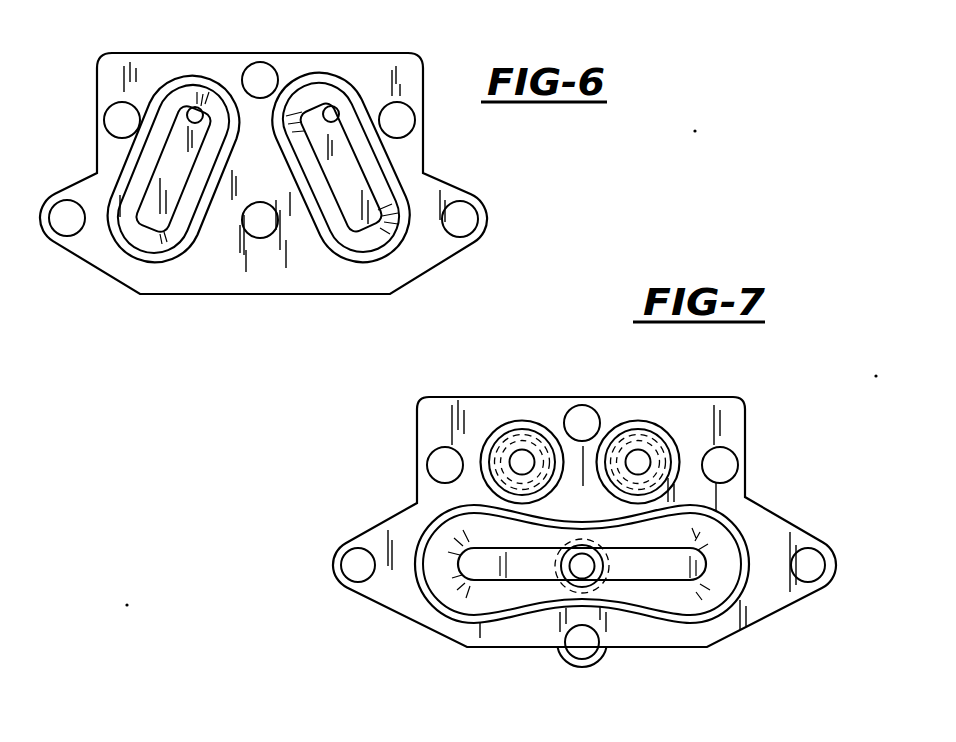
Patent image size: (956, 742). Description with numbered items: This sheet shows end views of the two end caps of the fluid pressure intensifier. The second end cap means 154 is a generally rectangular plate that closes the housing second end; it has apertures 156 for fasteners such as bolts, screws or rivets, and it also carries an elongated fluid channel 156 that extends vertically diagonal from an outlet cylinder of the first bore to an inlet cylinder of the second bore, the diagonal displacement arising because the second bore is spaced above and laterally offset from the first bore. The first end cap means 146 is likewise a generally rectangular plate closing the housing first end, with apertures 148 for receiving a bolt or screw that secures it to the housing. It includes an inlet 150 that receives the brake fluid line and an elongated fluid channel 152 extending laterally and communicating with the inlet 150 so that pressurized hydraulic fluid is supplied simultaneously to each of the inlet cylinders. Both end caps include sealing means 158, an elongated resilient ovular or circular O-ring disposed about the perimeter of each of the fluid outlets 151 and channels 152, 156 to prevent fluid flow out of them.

In FIG. 7, the first end cap means 146 is at (372, 498).
In FIG. 6, the apertures 148 is at (466, 234).
In FIG. 7, the apertures 148 is at (721, 463).
In FIG. 7, the inlet 150 is at (600, 572).
In FIG. 7, the fluid outlets 151 is at (529, 440).
In FIG. 7, the elongated fluid channel 152 is at (458, 572).
In FIG. 6, the second end cap means 154 is at (460, 174).
In FIG. 6, the apertures / fluid channel 156 is at (196, 107).
In FIG. 6, the sealing means 158 is at (143, 252).
In FIG. 7, the sealing means 158 is at (677, 450).